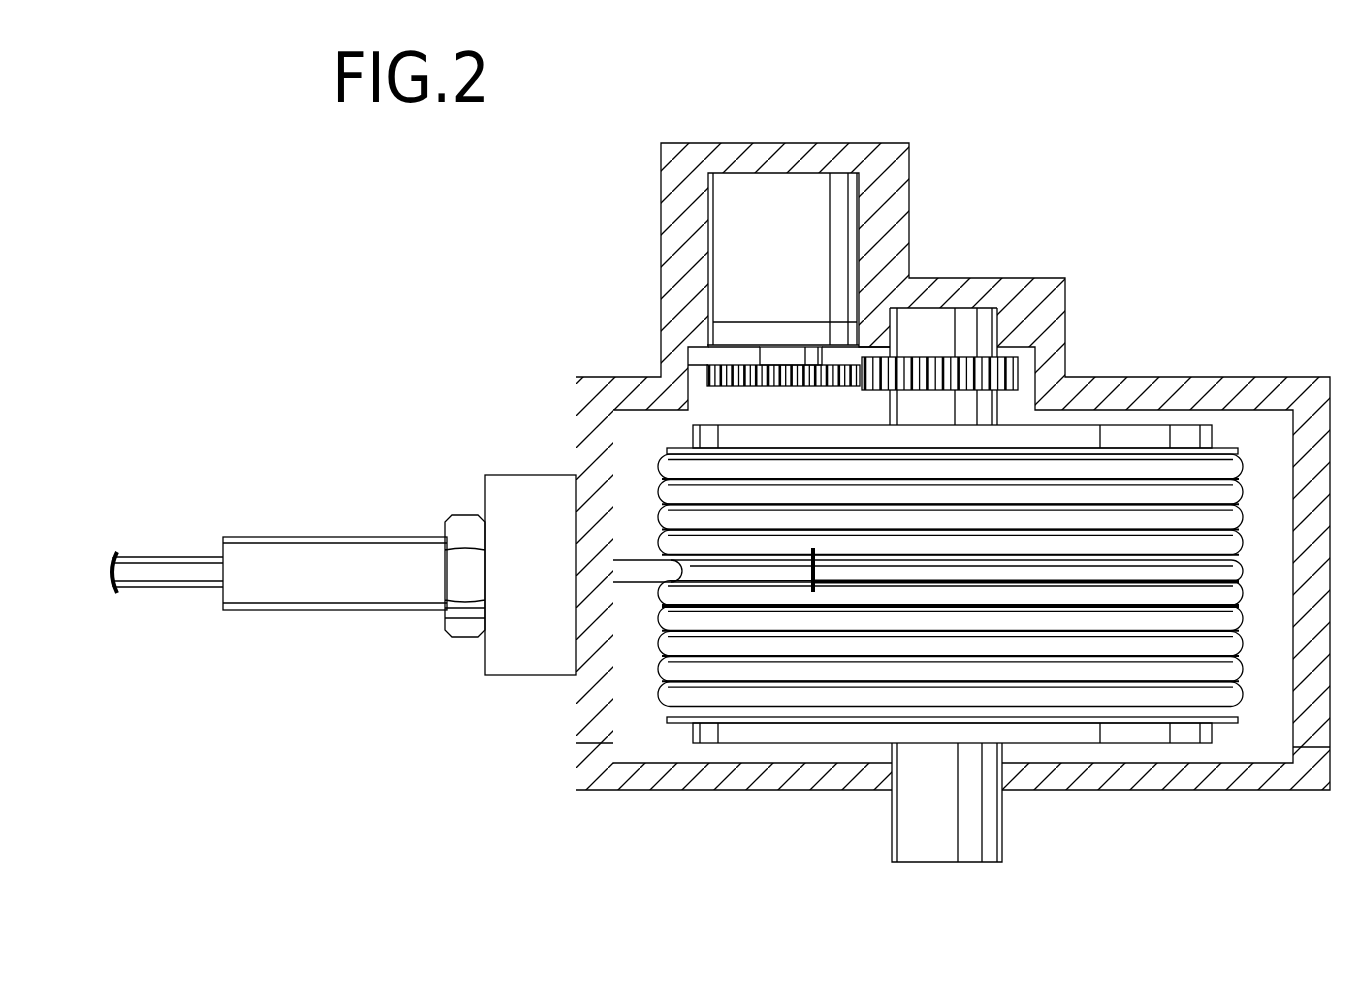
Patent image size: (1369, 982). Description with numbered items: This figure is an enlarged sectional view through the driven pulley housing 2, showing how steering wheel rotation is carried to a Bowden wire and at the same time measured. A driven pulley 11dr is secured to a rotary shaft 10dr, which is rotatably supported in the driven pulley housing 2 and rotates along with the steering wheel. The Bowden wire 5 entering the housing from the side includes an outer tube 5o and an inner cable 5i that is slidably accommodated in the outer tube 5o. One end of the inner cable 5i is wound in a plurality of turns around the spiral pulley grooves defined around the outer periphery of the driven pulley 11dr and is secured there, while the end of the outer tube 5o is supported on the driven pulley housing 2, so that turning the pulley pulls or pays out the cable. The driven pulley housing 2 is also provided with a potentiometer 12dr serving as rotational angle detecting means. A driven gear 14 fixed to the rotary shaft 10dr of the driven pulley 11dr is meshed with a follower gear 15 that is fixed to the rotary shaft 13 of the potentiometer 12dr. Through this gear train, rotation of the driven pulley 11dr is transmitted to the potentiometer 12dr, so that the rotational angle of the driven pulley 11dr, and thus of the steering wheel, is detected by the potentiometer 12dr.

The driven pulley housing 2 is at (1263, 383).
The Bowden wire 5 is at (384, 667).
The outer tube 5o is at (157, 575).
The inner cable 5i is at (657, 572).
The rotary shaft 10dr is at (968, 838).
The driven pulley 11dr is at (1190, 433).
The potentiometer 12dr is at (761, 173).
The rotary shaft of potentiometer 13 is at (788, 357).
The driven gear 14 is at (1022, 372).
The follower gear 15 is at (708, 372).